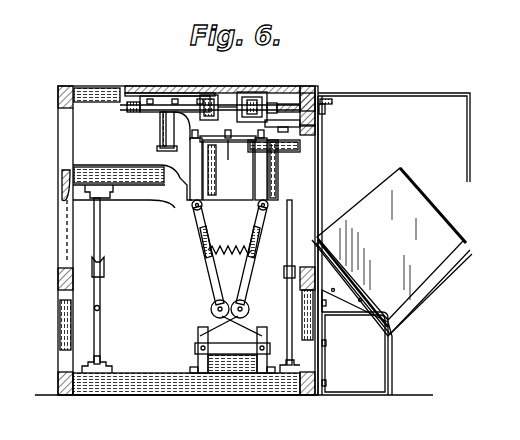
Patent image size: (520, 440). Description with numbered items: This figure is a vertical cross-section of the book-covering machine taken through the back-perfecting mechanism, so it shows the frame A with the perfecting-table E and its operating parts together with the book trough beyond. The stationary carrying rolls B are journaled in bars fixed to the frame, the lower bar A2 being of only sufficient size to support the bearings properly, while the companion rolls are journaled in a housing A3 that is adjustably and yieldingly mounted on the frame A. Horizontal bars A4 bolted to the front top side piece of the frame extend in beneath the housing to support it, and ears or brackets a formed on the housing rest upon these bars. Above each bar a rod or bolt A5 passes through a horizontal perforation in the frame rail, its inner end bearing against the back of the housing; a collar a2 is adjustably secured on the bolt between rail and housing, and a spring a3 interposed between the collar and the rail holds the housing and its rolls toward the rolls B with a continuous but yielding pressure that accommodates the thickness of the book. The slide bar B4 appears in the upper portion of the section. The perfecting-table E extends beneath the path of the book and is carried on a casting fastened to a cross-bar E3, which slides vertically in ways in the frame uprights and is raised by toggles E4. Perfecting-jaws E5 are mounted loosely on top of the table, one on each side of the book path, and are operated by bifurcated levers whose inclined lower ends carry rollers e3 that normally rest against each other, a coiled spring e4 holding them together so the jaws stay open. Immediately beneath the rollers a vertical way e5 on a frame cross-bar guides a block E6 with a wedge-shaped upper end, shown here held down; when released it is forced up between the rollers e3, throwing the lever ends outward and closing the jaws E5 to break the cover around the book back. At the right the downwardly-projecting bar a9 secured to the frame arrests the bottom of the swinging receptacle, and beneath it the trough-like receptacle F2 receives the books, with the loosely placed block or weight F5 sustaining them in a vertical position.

The frame A is at (58, 117).
The lower bar A2 is at (176, 131).
The housing A3 is at (278, 103).
The horizontal bars A4 is at (312, 128).
The rod or bolt A5 is at (305, 98).
The ears or brackets a is at (283, 130).
The collar a2 is at (394, 125).
The spring a3 is at (322, 112).
The downwardly-projecting bar a9 is at (385, 245).
The driving-rolls B is at (218, 105).
The slide bar B4 is at (157, 108).
The back-perfecting table E is at (234, 165).
The cross-bar E3 is at (152, 190).
The toggles E4 is at (104, 266).
The perfecting-jaws E5 is at (187, 150).
The block E6 is at (207, 330).
The rollers e3 is at (212, 310).
The coiled spring e4 is at (230, 240).
The vertical way e5 is at (203, 350).
The block or weight F5 is at (392, 252).
The trough-like receptacle F2 is at (470, 258).